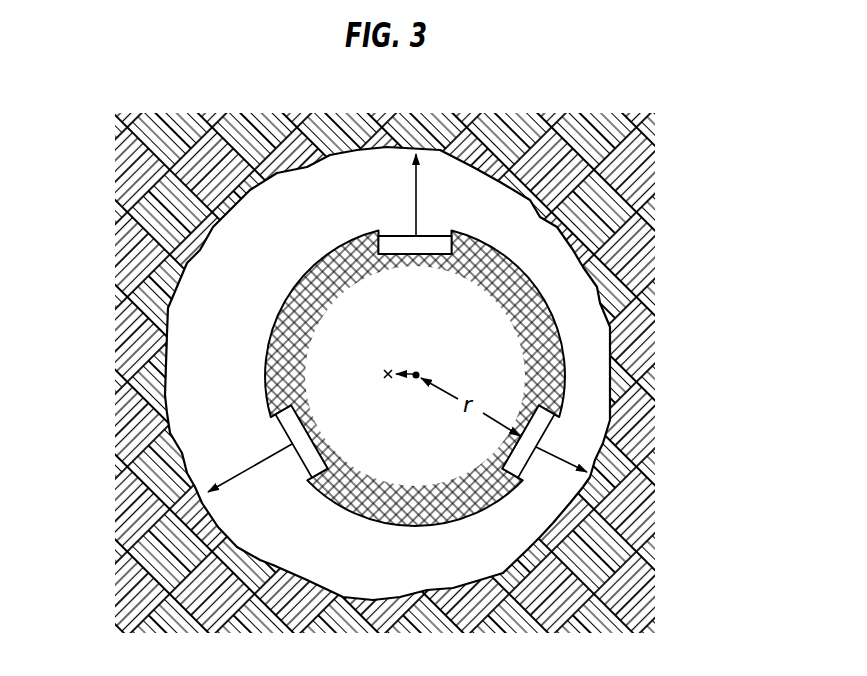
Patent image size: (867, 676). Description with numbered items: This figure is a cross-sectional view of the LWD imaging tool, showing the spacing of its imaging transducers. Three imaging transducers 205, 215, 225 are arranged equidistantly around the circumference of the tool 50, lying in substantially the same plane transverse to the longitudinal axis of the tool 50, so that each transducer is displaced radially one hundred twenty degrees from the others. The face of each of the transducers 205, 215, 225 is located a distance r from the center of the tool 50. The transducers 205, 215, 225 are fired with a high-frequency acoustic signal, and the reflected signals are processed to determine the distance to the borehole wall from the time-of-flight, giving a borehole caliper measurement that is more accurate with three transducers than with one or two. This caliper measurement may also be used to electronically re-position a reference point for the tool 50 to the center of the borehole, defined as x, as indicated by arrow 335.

The LWD tool 50 is at (547, 312).
The imaging transducer 205 is at (288, 441).
The imaging transducer 215 is at (432, 237).
The imaging transducer 225 is at (553, 432).
The arrow 335 is at (410, 377).